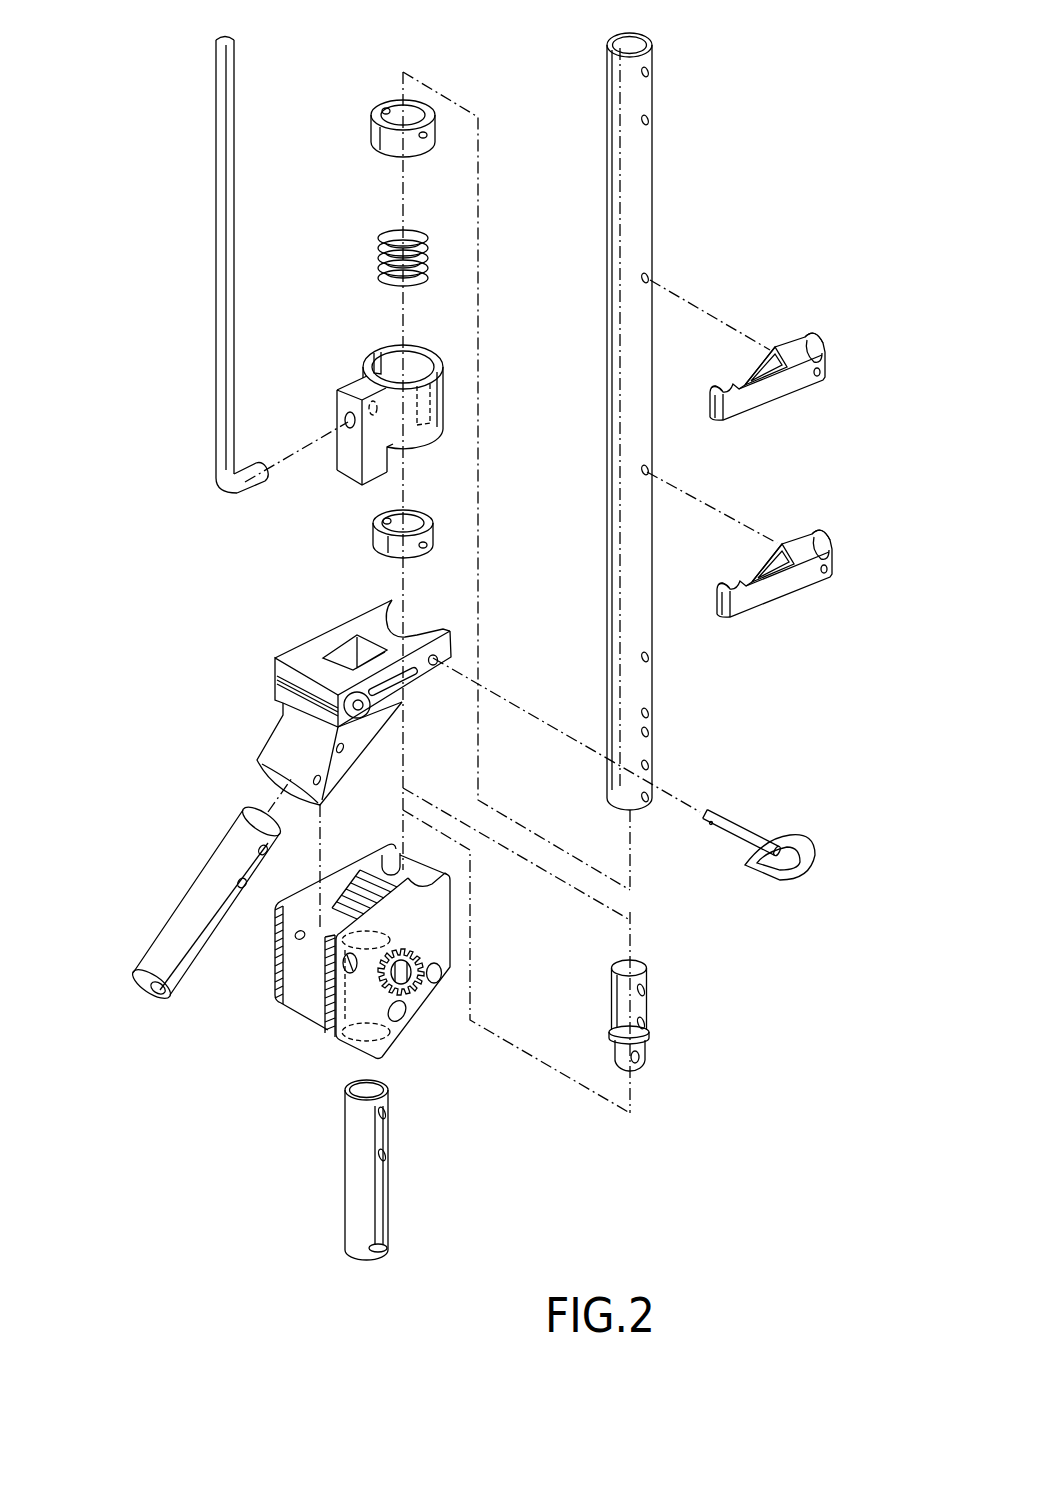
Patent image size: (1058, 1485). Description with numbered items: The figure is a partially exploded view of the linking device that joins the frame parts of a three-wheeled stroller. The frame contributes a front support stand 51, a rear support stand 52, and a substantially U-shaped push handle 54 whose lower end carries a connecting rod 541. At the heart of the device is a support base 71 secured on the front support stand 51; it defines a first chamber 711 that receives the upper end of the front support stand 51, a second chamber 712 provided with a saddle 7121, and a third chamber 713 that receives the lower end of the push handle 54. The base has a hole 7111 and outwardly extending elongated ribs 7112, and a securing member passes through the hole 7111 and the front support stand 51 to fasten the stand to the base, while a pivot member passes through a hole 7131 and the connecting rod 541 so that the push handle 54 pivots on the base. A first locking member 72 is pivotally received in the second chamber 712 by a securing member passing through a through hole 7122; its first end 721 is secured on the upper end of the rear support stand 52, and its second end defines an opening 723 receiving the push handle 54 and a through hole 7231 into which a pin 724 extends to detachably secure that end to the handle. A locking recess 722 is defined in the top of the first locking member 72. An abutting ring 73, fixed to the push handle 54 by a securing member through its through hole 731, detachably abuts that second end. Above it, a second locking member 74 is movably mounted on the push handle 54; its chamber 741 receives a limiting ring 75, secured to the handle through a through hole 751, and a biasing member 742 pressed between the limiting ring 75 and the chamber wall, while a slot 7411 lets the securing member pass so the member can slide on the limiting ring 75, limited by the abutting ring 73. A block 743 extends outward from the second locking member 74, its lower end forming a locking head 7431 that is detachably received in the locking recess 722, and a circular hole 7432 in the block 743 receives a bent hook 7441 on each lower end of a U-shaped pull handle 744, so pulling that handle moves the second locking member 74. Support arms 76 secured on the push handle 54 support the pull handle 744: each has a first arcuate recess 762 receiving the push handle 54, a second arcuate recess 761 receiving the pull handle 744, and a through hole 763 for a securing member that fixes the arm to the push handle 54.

The front support stand 51 is at (348, 1225).
The rear support stand 52 is at (153, 930).
The push handle 54 is at (656, 154).
The connecting rod 541 is at (648, 1010).
The support base 71 is at (450, 914).
The first chamber 711 is at (360, 1040).
The hole 7111 is at (400, 1014).
The elongated ribs 7112 is at (425, 992).
The second chamber 712 is at (303, 1000).
The saddle 7121 is at (353, 903).
The through hole 7122 is at (297, 938).
The third chamber 713 is at (410, 870).
The hole 7131 is at (442, 975).
The first locking member 72 is at (268, 684).
The first end 721 is at (283, 749).
The locking recess 722 is at (340, 657).
The opening 723 is at (410, 628).
The through hole 7231 is at (437, 666).
The pin 724 is at (740, 840).
The abutting ring 73 is at (436, 518).
The through hole 731 is at (430, 545).
The second locking member 74 is at (450, 397).
The chamber 741 is at (420, 358).
The slot 7411 is at (374, 354).
The biasing member 742 is at (380, 249).
The block 743 is at (355, 385).
The locking head 7431 is at (378, 466).
The circular hole 7432 is at (347, 423).
The pull handle 744 is at (220, 331).
The bent hook 7441 is at (252, 466).
The limiting ring 75 is at (366, 114).
The through hole 751 is at (430, 137).
The support arm 76 is at (782, 405).
The second arcuate recess 761 is at (727, 382).
The first arcuate recess 762 is at (797, 350).
The through hole 763 is at (824, 372).